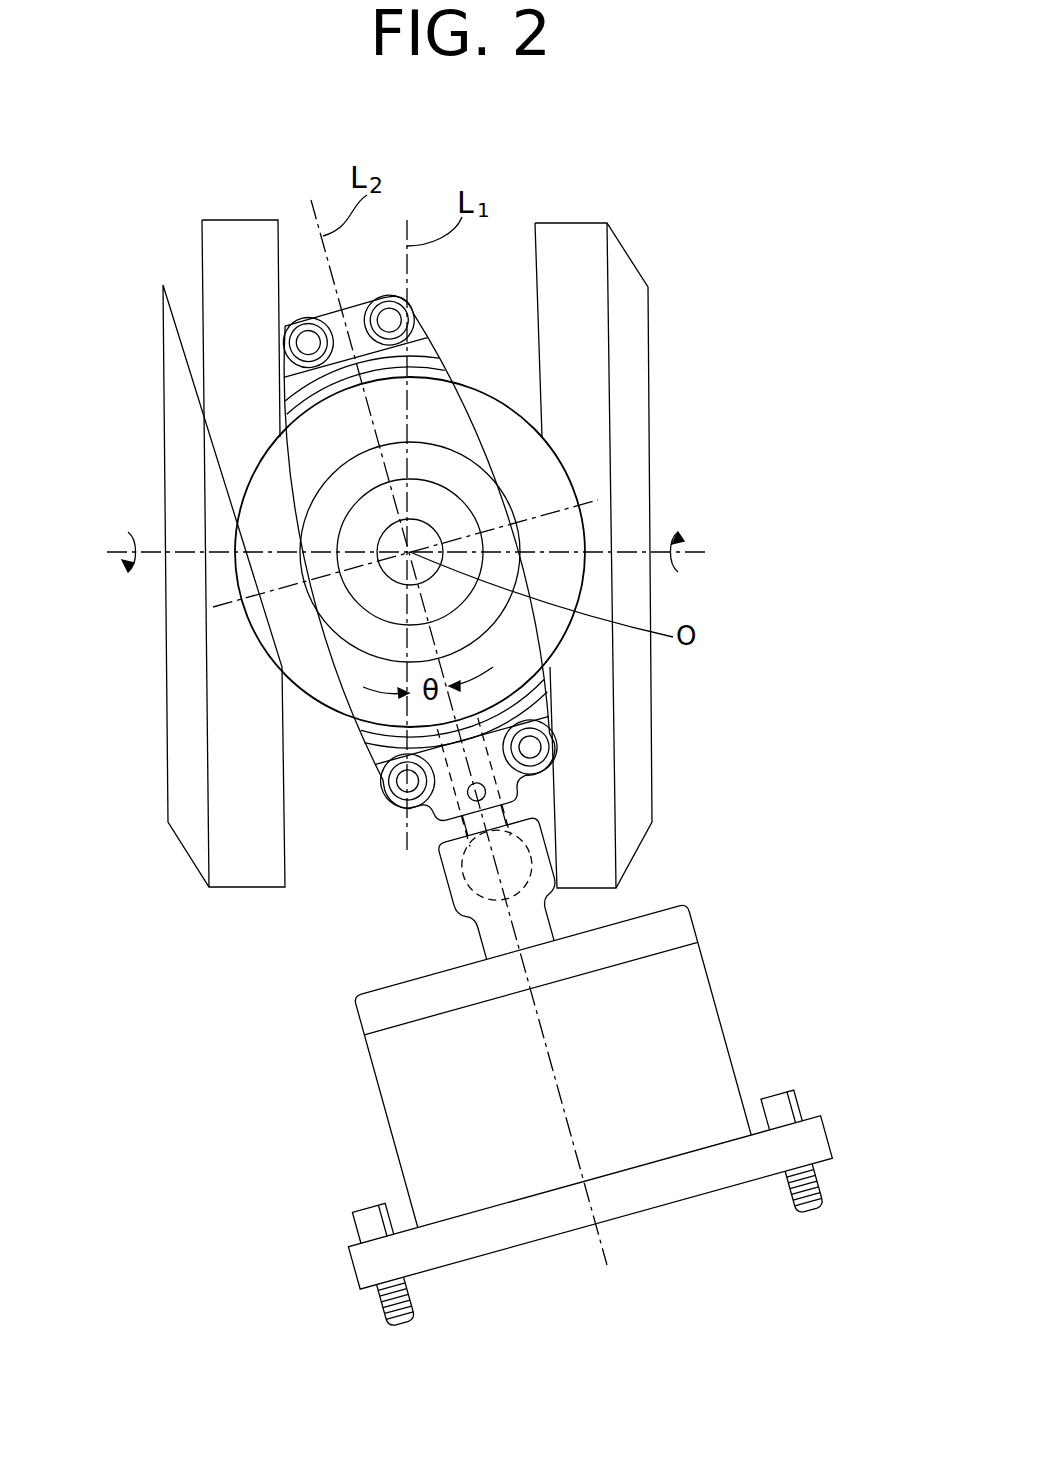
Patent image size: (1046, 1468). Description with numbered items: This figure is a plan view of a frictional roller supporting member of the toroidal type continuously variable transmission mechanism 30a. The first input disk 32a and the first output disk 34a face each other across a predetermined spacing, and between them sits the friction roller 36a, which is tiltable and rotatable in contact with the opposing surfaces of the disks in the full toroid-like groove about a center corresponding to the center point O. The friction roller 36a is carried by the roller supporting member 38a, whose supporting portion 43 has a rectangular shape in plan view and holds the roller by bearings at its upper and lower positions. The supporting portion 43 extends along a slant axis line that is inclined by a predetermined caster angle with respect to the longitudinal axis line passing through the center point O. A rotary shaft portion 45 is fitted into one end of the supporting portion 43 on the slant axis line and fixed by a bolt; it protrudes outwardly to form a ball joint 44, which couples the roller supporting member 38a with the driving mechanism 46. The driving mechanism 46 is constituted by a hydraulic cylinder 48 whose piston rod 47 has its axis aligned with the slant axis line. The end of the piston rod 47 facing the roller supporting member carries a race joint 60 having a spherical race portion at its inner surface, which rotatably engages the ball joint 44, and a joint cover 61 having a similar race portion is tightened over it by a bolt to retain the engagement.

The toroidal type continuously variable transmission mechanism 30a is at (535, 208).
The first input disk 32a is at (223, 401).
The first output disk 34a is at (590, 397).
The friction roller 36a is at (285, 642).
The roller supporting member 38a is at (305, 475).
The supporting portion 43 is at (363, 697).
The ball joint 44 is at (465, 885).
The rotary shaft portion 45 is at (413, 840).
The driving mechanism 46 is at (765, 1067).
The piston rod 47 is at (537, 927).
The hydraulic cylinder 48 is at (705, 1025).
The race joint 60 is at (458, 917).
The joint cover 61 is at (443, 860).